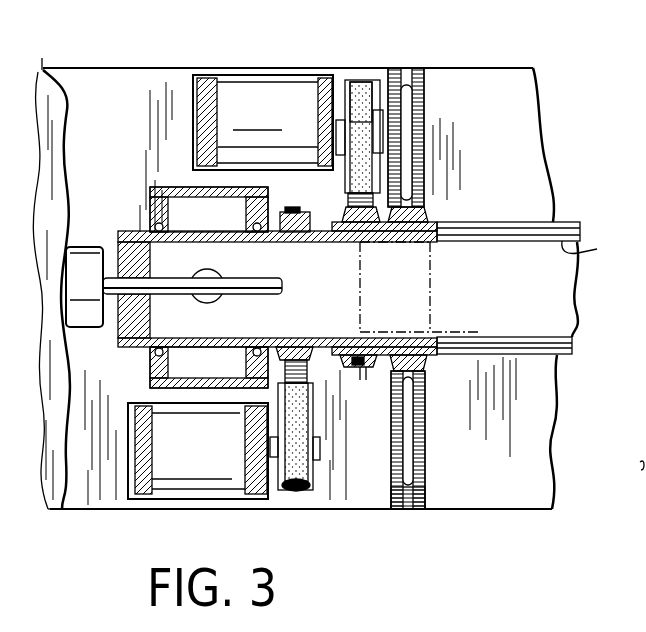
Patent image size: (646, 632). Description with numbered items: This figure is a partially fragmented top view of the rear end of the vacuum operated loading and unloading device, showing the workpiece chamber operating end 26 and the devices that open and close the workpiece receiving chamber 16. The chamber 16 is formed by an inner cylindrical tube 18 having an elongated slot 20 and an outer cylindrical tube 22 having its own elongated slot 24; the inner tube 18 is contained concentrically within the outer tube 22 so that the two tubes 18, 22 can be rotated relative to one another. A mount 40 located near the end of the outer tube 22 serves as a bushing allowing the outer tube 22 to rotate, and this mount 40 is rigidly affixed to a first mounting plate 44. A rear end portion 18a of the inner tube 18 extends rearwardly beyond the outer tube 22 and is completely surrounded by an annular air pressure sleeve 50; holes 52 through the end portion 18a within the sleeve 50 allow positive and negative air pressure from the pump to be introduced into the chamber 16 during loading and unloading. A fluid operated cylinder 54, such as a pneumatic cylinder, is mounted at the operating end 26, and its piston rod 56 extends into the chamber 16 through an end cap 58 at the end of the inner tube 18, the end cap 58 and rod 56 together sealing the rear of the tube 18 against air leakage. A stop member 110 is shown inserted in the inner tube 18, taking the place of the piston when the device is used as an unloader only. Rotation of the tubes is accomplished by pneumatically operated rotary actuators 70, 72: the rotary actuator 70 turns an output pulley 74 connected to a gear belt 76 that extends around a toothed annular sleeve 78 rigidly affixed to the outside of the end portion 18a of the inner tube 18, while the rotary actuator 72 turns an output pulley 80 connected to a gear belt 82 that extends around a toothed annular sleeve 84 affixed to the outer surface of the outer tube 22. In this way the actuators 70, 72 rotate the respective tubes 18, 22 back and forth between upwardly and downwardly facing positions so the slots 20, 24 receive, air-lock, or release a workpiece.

The workpiece receiving chamber 16 is at (557, 311).
The inner cylindrical tube 18 is at (413, 242).
The rear end portion of inner tube 18a is at (318, 243).
The elongated slot of inner tube 20 is at (595, 237).
The outer cylindrical tube 22 is at (410, 347).
The elongated slot of outer tube 24 is at (560, 222).
The workpiece chamber operating end 26 is at (57, 524).
The mount 40 is at (405, 212).
The first mounting plate 44 is at (468, 498).
The annular air pressure sleeve 50 is at (173, 187).
The holes 52 is at (218, 243).
The fluid operated cylinder 54 is at (80, 260).
The piston rod 56 is at (280, 294).
The end cap 58 is at (140, 305).
The rotary actuator 70 is at (200, 455).
The rotary actuator 72 is at (274, 121).
The output pulley 74 is at (312, 487).
The gear belt 76 is at (290, 490).
The toothed annular sleeve 78 is at (297, 352).
The output pulley 80 is at (370, 82).
The gear belt 82 is at (357, 82).
The toothed annular sleeve 84 is at (375, 366).
The stop member 110 is at (484, 356).